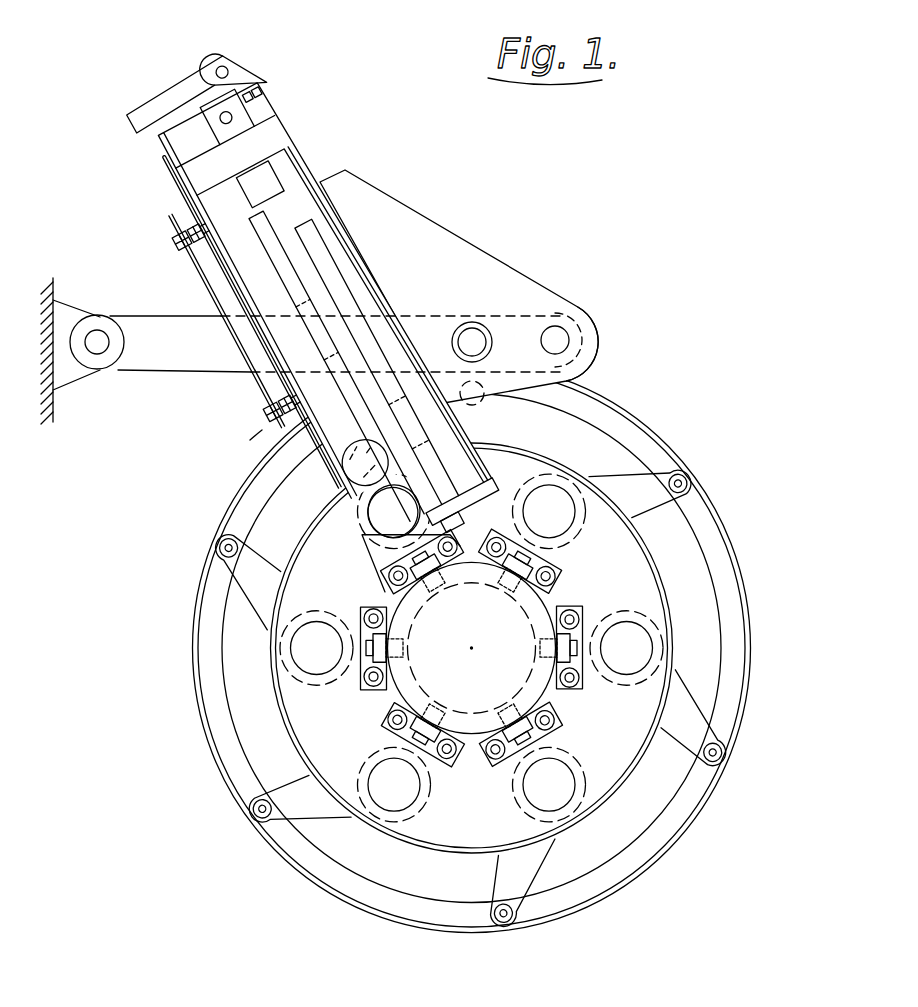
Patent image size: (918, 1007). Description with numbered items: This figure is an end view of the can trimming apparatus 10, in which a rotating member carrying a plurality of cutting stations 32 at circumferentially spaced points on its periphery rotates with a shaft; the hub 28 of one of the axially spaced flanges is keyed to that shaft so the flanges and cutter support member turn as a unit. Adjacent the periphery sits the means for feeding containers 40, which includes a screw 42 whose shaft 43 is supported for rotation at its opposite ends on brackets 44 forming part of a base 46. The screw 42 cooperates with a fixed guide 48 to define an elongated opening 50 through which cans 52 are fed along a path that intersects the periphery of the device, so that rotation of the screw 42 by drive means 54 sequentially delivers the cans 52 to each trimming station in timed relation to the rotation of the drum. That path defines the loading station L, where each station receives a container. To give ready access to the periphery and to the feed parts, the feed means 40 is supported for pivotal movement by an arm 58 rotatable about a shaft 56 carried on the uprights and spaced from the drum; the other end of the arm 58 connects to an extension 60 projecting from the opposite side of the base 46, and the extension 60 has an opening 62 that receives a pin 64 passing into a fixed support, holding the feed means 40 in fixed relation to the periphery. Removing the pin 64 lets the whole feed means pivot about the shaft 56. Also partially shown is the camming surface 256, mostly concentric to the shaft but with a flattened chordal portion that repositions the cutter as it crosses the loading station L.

The can trimming apparatus 10 is at (707, 846).
The camming surface 256 is at (619, 437).
The cutting stations 32 is at (690, 620).
The hub 28 is at (449, 553).
The means for feeding containers 40 is at (433, 222).
The screw 42 is at (354, 357).
The shaft 43 is at (260, 184).
The brackets 44 is at (465, 507).
The base 46 is at (327, 310).
The fixed guide 48 is at (251, 321).
The elongated opening 50 is at (234, 317).
The cans 52 is at (379, 488).
The drive means 54 is at (197, 100).
The shaft 56 is at (97, 340).
The arm 58 is at (137, 358).
The extension 60 is at (497, 274).
The opening 62 is at (473, 340).
The pin 64 is at (476, 346).
The loading station L is at (276, 446).